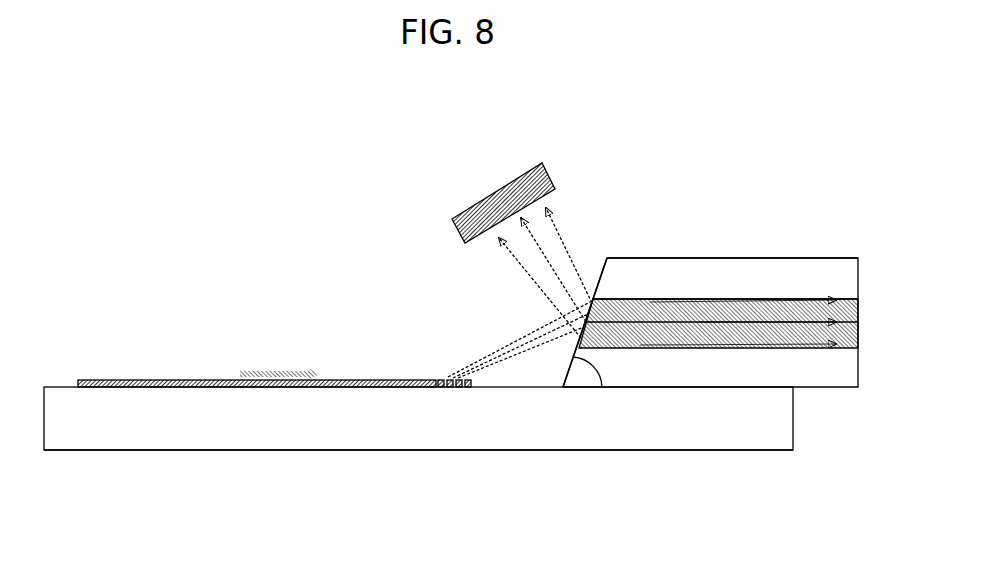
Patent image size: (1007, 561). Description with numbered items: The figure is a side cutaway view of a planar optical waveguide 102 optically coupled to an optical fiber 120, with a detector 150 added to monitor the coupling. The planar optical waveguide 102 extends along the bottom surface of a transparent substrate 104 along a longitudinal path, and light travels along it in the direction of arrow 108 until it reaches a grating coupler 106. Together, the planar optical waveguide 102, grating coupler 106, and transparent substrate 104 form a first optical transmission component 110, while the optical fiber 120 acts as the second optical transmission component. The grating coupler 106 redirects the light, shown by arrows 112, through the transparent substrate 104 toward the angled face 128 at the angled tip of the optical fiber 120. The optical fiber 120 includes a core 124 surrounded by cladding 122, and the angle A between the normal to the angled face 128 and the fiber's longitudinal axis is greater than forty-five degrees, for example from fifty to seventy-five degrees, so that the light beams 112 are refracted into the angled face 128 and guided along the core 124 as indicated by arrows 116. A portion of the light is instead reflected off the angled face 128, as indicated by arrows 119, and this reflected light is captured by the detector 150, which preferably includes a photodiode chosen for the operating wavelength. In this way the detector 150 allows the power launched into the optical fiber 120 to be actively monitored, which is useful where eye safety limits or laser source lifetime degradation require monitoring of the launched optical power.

The planar optical waveguide 102 is at (160, 388).
The transparent substrate 104 is at (383, 407).
The grating coupler 106 is at (466, 392).
The arrow indicating light propagation along the planar optical waveguide 108 is at (283, 392).
The first optical transmission component 110 is at (662, 453).
The light redirected by the grating coupler (arrows) 112 is at (478, 350).
The light guided along the fiber core (arrows) 116 is at (803, 305).
The light reflected off the angled face (arrows) 119 is at (513, 285).
The optical fiber 120 is at (645, 262).
The cladding 122 is at (696, 272).
The core 124 is at (742, 322).
The angled face 128 is at (598, 262).
The detector 150 is at (487, 185).
The angle A is at (579, 376).